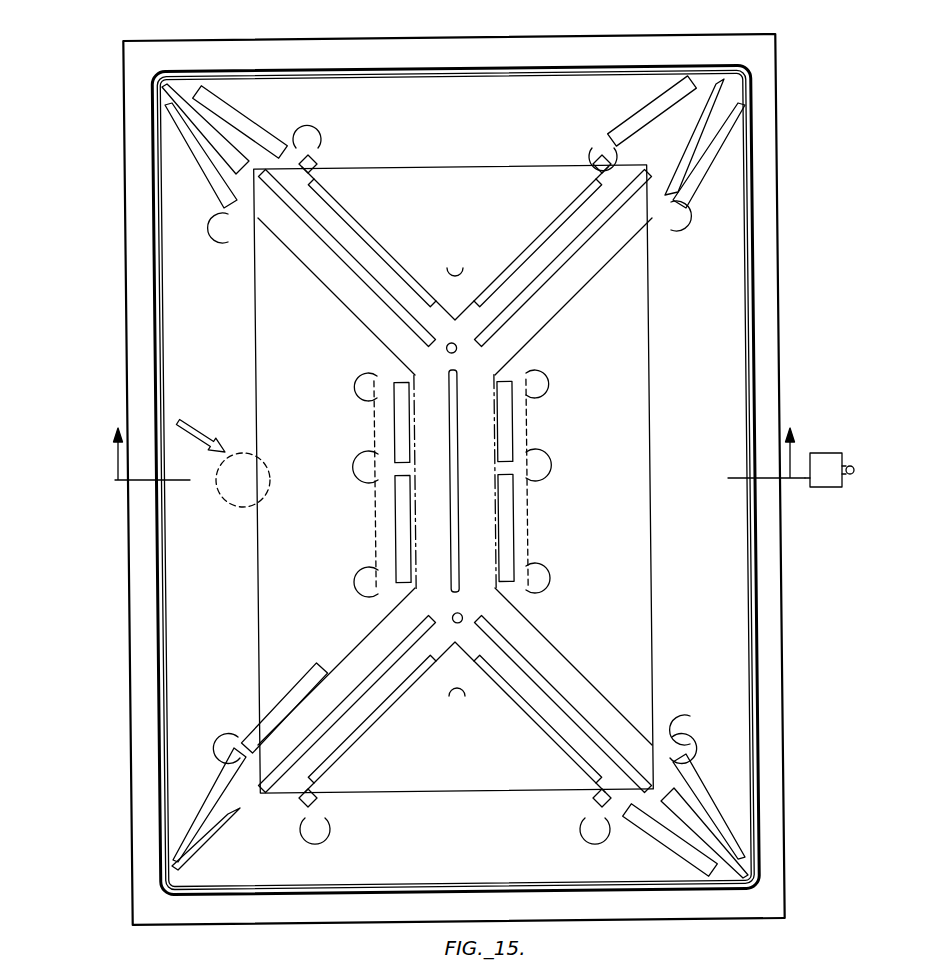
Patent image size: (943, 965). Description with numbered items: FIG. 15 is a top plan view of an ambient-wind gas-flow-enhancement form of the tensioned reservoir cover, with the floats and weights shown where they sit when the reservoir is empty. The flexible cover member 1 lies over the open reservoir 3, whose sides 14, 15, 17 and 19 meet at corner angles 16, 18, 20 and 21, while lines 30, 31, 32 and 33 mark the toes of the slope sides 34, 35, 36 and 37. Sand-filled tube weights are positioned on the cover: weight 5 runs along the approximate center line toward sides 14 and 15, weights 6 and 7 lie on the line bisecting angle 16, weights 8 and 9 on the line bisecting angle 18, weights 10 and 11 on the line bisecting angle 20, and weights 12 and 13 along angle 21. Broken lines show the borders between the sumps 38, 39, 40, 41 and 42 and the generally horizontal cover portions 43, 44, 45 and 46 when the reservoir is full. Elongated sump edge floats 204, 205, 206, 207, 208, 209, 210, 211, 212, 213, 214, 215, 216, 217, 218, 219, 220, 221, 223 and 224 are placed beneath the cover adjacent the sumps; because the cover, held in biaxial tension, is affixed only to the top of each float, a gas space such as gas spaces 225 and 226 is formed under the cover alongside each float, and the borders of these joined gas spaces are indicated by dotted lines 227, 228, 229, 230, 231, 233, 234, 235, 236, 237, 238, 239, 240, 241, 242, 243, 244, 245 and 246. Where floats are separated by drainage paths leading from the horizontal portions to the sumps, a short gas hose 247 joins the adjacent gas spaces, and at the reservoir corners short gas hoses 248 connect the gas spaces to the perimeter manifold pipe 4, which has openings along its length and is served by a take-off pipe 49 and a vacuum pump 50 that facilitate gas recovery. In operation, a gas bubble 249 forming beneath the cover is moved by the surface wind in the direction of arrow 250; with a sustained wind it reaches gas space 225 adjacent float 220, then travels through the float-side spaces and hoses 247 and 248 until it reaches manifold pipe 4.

The flexible cover member 1 is at (170, 596).
The open reservoir 3 is at (579, 72).
The manifold pipe 4 is at (755, 570).
The weight 5 is at (462, 512).
The weight 6 is at (228, 150).
The weight 7 is at (373, 283).
The weight 8 is at (673, 137).
The weight 9 is at (520, 275).
The weight 10 is at (725, 862).
The weight 11 is at (575, 692).
The weight 12 is at (232, 800).
The weight 13 is at (345, 648).
The reservoir side 14 is at (356, 72).
The reservoir side 15 is at (352, 893).
The angle 16 is at (195, 95).
The reservoir side 17 is at (157, 631).
The angle 18 is at (712, 110).
The reservoir side 19 is at (745, 298).
The angle 20 is at (706, 848).
The angle 21 is at (198, 858).
The toe line 30 is at (446, 168).
The toe line 31 is at (655, 440).
The toe line 32 is at (470, 795).
The toe line 33 is at (258, 572).
The slope side 34 is at (512, 98).
The slope side 35 is at (715, 605).
The slope side 36 is at (418, 850).
The slope side 37 is at (182, 350).
The sump 38 is at (392, 214).
The sump 39 is at (602, 292).
The sump 40 is at (478, 537).
The sump 41 is at (645, 668).
The sump 42 is at (273, 665).
The horizontal cover portion 43 is at (471, 218).
The horizontal cover portion 44 is at (606, 508).
The horizontal cover portion 45 is at (448, 782).
The horizontal cover portion 46 is at (266, 356).
The take-off pipe 49 is at (808, 490).
The vacuum pump 50 is at (828, 454).
The sump edge float 204 is at (240, 112).
The sump edge float 205 is at (318, 165).
The sump edge float 206 is at (592, 166).
The sump edge float 207 is at (686, 82).
The sump edge float 208 is at (748, 165).
The sump edge float 209 is at (574, 312).
The sump edge float 210 is at (512, 410).
The sump edge float 211 is at (515, 498).
The sump edge float 212 is at (540, 612).
The sump edge float 213 is at (705, 790).
The sump edge float 214 is at (662, 852).
The sump edge float 215 is at (560, 786).
The sump edge float 216 is at (374, 755).
The sump edge float 217 is at (262, 848).
The sump edge float 218 is at (170, 808).
The sump edge float 219 is at (290, 706).
The sump edge float 220 is at (398, 528).
The sump edge float 221 is at (400, 438).
The sump edge float 223 is at (266, 251).
The sump edge float 224 is at (180, 142).
The gas space 225 is at (385, 545).
The gas space 226 is at (525, 552).
The gas space border line 227 is at (283, 118).
The gas space border line 228 is at (370, 193).
The gas space border line 229 is at (548, 197).
The gas space border line 230 is at (628, 108).
The gas space border line 231 is at (705, 178).
The gas space border line 233 is at (628, 272).
The gas space border line 234 is at (530, 432).
The gas space border line 235 is at (578, 632).
The gas space border line 236 is at (740, 745).
The gas space border line 237 is at (615, 846).
The gas space border line 238 is at (558, 806).
The gas space border line 239 is at (355, 808).
The gas space border line 240 is at (292, 850).
The gas space border line 241 is at (200, 770).
The gas space border line 242 is at (292, 678).
The gas space border line 243 is at (385, 511).
The gas space border line 244 is at (383, 427).
The gas space border line 245 is at (268, 280).
The gas space border line 246 is at (175, 165).
The short gas hose 247 is at (328, 131).
The short gas hose 248 is at (216, 73).
The gas bubble 249 is at (240, 508).
The arrow 250 is at (196, 428).